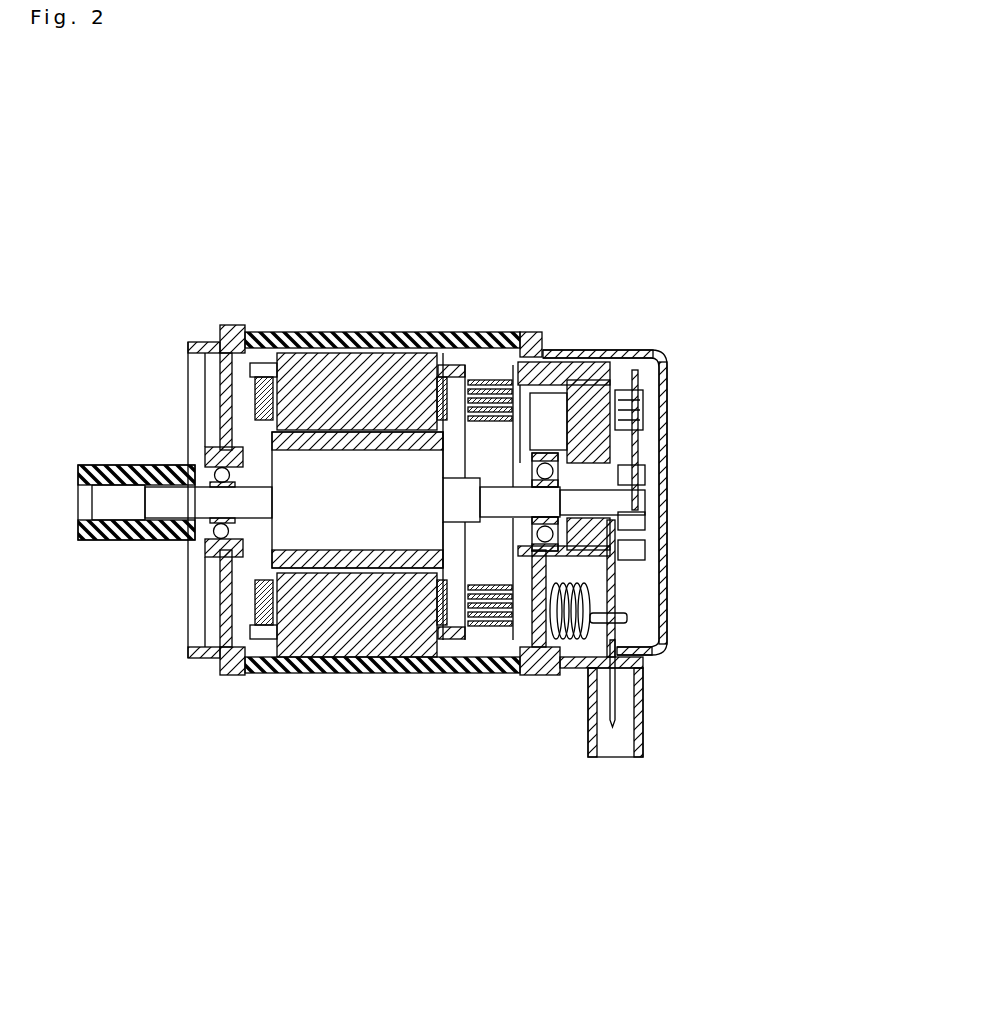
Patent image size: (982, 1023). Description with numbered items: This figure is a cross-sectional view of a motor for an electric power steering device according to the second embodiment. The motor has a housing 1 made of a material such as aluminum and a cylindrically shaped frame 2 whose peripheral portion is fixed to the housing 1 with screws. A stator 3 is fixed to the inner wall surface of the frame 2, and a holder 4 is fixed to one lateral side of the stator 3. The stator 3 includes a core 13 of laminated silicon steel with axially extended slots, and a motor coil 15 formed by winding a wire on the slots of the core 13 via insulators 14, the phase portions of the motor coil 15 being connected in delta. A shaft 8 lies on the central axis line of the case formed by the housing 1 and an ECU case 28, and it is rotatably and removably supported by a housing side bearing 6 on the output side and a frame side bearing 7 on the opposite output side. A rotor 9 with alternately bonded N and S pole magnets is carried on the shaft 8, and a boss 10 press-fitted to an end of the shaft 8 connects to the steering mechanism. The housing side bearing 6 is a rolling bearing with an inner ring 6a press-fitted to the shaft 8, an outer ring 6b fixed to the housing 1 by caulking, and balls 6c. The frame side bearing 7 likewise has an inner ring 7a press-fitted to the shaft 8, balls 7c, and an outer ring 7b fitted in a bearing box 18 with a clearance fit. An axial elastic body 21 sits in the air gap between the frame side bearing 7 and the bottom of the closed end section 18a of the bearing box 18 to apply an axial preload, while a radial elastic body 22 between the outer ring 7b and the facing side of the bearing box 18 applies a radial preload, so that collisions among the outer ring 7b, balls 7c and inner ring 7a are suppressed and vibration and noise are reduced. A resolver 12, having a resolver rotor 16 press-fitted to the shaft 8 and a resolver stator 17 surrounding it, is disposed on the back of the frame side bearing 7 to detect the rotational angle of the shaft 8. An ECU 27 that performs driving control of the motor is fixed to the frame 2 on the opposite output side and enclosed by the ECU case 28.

The housing 1 is at (225, 327).
The frame 2 is at (452, 332).
The stator 3 is at (372, 332).
The holder 4 is at (487, 597).
The housing side bearing 6 is at (198, 459).
The inner ring 6a is at (188, 463).
The outer ring 6b is at (205, 327).
The balls 6c is at (190, 350).
The frame side bearing 7 is at (515, 332).
The inner ring 7a is at (505, 560).
The outer ring 7b is at (540, 600).
The balls 7c is at (527, 470).
The shaft 8 is at (210, 500).
The rotor 9 is at (285, 673).
The boss 10 is at (110, 465).
The resolver 12 is at (645, 502).
The core 13 is at (311, 575).
The insulators 14 is at (260, 327).
The motor coil 15 is at (290, 327).
The resolver rotor 16 is at (645, 476).
The resolver stator 17 is at (638, 452).
The bearing box 18 is at (543, 676).
The closed end section 18a is at (645, 548).
The axial elastic body 21 is at (645, 520).
The radial elastic body 22 is at (608, 388).
The ECU 27 is at (665, 325).
The ECU case 28 is at (667, 415).